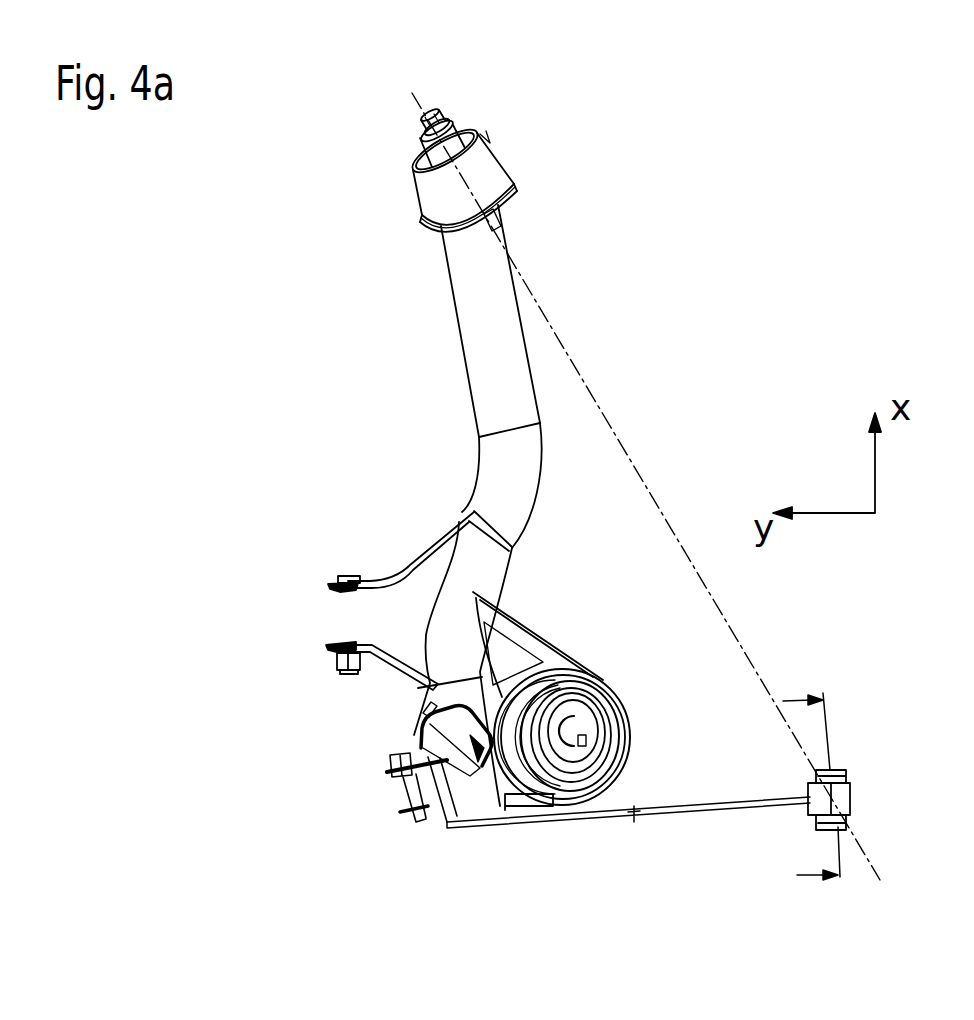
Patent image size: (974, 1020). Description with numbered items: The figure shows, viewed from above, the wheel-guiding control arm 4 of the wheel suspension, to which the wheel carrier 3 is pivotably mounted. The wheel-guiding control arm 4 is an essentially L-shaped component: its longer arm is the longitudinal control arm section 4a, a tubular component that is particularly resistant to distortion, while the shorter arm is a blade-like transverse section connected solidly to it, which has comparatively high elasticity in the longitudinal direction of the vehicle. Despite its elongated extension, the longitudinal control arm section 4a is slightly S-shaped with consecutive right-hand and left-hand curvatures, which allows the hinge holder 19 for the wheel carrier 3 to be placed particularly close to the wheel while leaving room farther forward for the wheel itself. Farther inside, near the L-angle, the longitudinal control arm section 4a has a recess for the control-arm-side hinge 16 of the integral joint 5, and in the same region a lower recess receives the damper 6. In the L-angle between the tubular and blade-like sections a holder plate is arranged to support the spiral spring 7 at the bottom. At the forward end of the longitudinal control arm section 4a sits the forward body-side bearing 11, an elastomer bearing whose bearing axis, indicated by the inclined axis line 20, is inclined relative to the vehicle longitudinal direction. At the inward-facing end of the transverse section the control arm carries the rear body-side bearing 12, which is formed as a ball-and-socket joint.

The wheel carrier 3 is at (268, 621).
The wheel-guiding control arm 4 is at (655, 155).
The longitudinal control arm section 4a is at (475, 360).
The integral joint 5 is at (366, 797).
The damper 6 is at (480, 747).
The spiral spring 7 is at (578, 692).
The forward body-side bearing 11 is at (443, 190).
The rear body-side bearing 12 is at (862, 757).
The control-arm-side hinge 16 is at (400, 790).
The hinge holder 19 is at (427, 613).
The link axis 20 is at (643, 440).